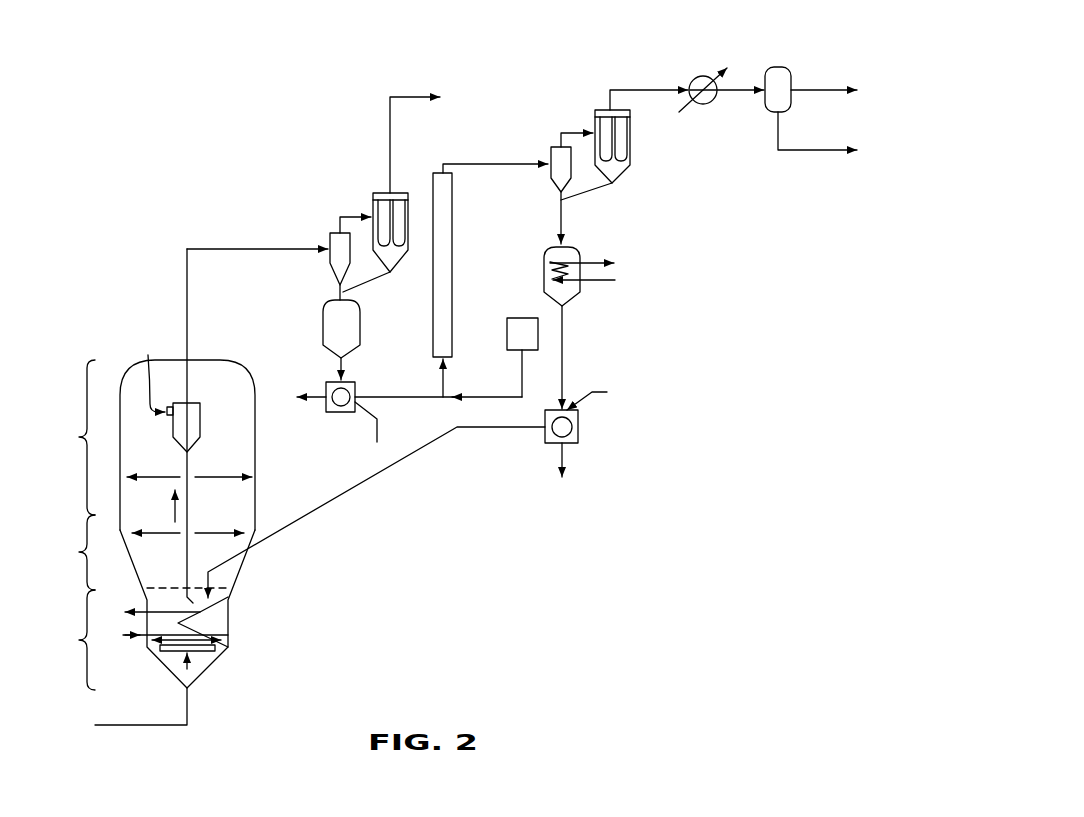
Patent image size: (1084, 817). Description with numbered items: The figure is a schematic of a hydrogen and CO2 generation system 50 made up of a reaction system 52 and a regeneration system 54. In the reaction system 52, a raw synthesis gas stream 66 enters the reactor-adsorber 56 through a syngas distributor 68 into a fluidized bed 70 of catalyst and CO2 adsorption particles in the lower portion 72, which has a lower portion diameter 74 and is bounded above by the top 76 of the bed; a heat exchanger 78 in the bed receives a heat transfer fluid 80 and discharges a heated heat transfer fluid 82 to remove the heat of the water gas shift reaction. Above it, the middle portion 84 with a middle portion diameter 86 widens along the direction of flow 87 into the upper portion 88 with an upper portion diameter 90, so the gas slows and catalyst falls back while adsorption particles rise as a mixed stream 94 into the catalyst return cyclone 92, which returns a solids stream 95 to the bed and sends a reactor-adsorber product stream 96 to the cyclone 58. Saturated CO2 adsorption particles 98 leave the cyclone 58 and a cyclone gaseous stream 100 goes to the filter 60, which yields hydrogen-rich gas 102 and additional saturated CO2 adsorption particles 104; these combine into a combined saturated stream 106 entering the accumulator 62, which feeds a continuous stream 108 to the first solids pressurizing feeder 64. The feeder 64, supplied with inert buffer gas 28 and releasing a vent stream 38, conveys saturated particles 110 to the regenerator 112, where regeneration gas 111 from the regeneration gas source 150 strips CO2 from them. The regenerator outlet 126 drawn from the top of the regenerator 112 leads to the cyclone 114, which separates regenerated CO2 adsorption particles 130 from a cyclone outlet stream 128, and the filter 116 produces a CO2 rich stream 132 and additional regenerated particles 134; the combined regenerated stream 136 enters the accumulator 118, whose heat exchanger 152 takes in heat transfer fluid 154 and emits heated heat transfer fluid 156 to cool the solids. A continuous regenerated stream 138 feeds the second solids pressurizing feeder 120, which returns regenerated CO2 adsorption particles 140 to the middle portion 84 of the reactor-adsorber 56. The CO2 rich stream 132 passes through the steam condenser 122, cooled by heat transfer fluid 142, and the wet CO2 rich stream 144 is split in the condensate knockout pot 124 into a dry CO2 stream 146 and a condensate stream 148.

The inert buffer gas 28 is at (376, 433).
The vent stream 38 is at (312, 400).
The hydrogen and CO2 generation system 50 is at (230, 102).
The reaction system 52 is at (166, 263).
The regeneration system 54 is at (442, 73).
The reactor-adsorber 56 is at (228, 362).
The cyclone 58 is at (330, 236).
The filter 60 is at (381, 190).
The accumulator 62 is at (323, 322).
The first solids pressurizing feeder 64 is at (357, 390).
The raw synthesis gas stream 66 is at (140, 726).
The syngas distributor 68 is at (207, 655).
The fluidized bed 70 is at (222, 622).
The lower portion 72 is at (70, 640).
The lower portion diameter 74 is at (224, 648).
The top of the fluidized bed 76 is at (163, 588).
The heat exchanger 78 is at (216, 605).
The heat transfer fluid 80 is at (136, 636).
The heated heat transfer fluid 82 is at (143, 611).
The middle portion 84 is at (70, 552).
The middle portion diameter 86 is at (218, 533).
The direction of flow 87 is at (173, 509).
The upper portion 88 is at (70, 437).
The upper portion diameter 90 is at (222, 477).
The catalyst return cyclone 92 is at (200, 420).
The mixed stream 94 is at (147, 370).
The solids stream 95 is at (191, 526).
The reactor-adsorber product stream 96 is at (251, 249).
The saturated CO2 adsorption particles 98 is at (338, 289).
The cyclone gaseous stream 100 is at (352, 215).
The hydrogen-rich gas 102 is at (390, 145).
The additional saturated CO2 adsorption particles 104 is at (394, 271).
The combined saturated CO2 adsorption particles stream 106 is at (344, 290).
The continuous saturated CO2 adsorption particles stream 108 is at (337, 368).
The saturated CO2 adsorption particles 110 is at (409, 400).
The regeneration gas 111 is at (455, 396).
The regenerator 112 is at (455, 270).
The cyclone 114 is at (558, 133).
The filter 116 is at (598, 108).
The accumulator 118 is at (569, 302).
The second solids pressurizing feeder 120 is at (581, 428).
The steam condenser 122 is at (688, 75).
The condensate knockout pot 124 is at (781, 66).
The column overhead line 126 is at (472, 163).
The cyclone outlet stream 128 is at (573, 145).
The regenerated CO2 adsorption particles 130 is at (559, 194).
The CO2 rich stream 132 is at (645, 89).
The additional regenerated CO2 adsorption particles 134 is at (614, 185).
The combined regenerated CO2 adsorption particles stream 136 is at (563, 214).
The continuous regenerated CO2 adsorption particles stream 138 is at (565, 340).
The regenerated CO2 adsorption particles 140 is at (333, 500).
The heat transfer fluid 142 is at (689, 107).
The wet CO2 rich stream 144 is at (737, 92).
The dry CO2 stream 146 is at (823, 89).
The condensate stream 148 is at (811, 152).
The regeneration gas source 150 is at (522, 318).
The heat exchanger 152 is at (552, 262).
The heat transfer fluid 154 is at (598, 283).
The heated heat transfer fluid 156 is at (600, 262).